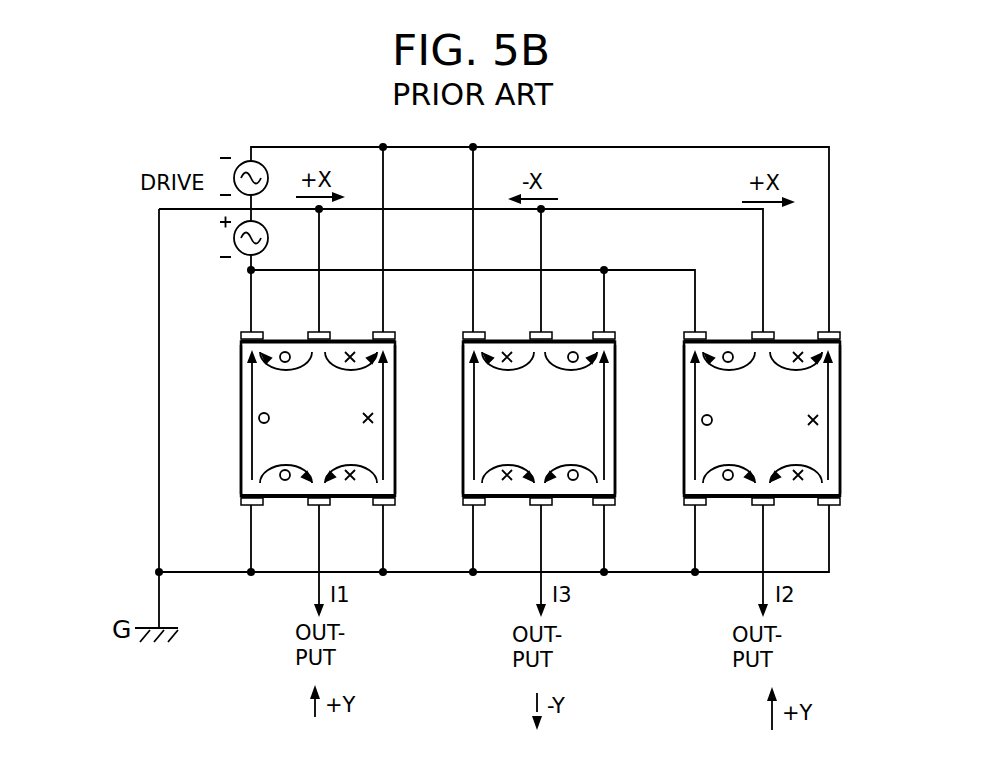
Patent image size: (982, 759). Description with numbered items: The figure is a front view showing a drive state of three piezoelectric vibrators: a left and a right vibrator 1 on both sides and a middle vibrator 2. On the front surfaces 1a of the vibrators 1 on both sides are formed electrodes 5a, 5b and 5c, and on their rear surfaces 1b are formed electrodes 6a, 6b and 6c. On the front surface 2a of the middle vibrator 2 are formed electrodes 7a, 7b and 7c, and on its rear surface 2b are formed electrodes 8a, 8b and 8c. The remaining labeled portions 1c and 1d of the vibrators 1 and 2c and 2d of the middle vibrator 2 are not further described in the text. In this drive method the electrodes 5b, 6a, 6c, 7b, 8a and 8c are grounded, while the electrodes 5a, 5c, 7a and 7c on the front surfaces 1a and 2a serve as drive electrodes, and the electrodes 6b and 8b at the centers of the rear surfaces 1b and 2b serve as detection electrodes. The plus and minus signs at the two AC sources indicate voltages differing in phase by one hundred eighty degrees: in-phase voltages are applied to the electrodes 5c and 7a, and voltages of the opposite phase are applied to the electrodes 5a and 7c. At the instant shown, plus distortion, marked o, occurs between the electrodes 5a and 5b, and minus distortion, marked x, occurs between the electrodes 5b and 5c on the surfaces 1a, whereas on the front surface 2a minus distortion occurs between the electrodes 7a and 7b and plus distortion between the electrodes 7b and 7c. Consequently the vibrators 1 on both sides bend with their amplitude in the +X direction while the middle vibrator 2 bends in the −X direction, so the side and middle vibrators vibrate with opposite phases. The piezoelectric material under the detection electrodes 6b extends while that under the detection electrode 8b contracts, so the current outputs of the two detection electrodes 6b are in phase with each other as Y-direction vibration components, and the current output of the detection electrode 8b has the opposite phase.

The vibrator 1 is at (402, 372).
The front surface 1a is at (264, 341).
The rear surface 1b is at (293, 498).
The left side face of first element 1c is at (241, 443).
The right side face of first element 1d is at (395, 423).
The middle vibrator 2 is at (624, 372).
The front surface 2a is at (490, 341).
The rear surface 2b is at (512, 500).
The left side face of second element 2c is at (463, 438).
The right side face of second element 2d is at (615, 423).
The drive electrode 5a is at (247, 331).
The electrode 5b is at (313, 331).
The drive electrode 5c is at (374, 331).
The electrode 6a is at (247, 505).
The detection electrode 6b is at (313, 505).
The electrode 6c is at (380, 505).
The drive electrode 7a is at (472, 331).
The electrode 7b is at (538, 331).
The drive electrode 7c is at (600, 331).
The electrode 8a is at (470, 507).
The detection electrode 8b is at (534, 507).
The electrode 8c is at (601, 507).